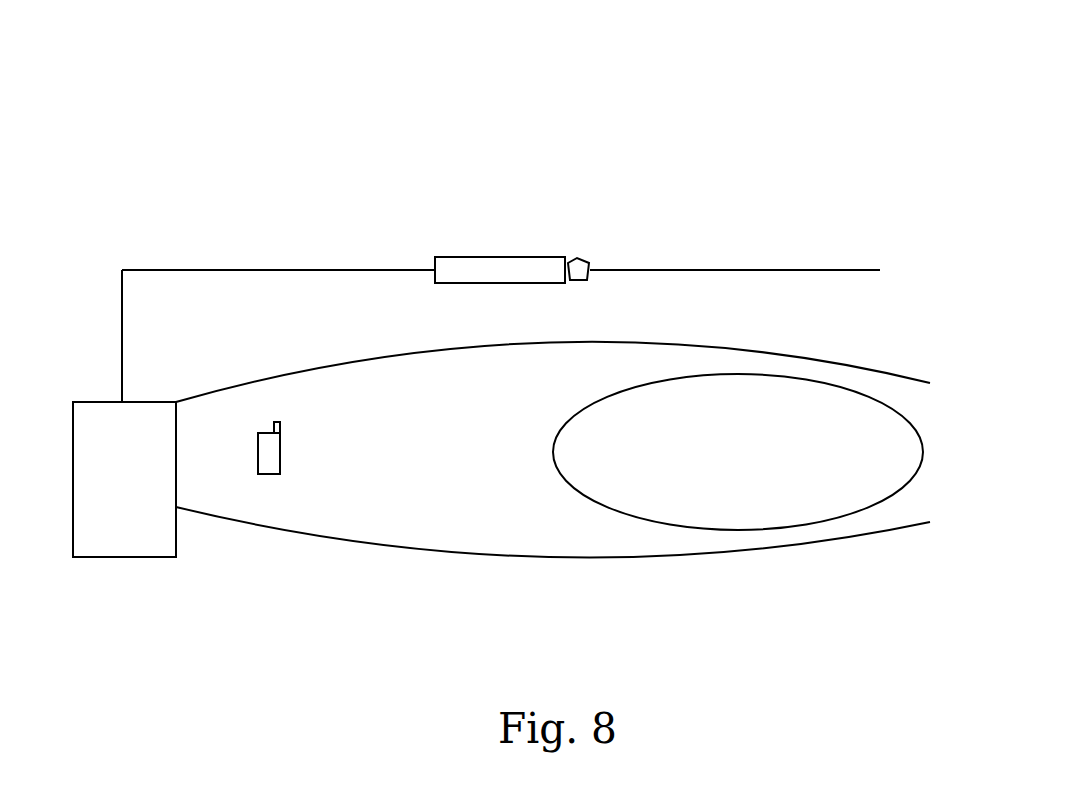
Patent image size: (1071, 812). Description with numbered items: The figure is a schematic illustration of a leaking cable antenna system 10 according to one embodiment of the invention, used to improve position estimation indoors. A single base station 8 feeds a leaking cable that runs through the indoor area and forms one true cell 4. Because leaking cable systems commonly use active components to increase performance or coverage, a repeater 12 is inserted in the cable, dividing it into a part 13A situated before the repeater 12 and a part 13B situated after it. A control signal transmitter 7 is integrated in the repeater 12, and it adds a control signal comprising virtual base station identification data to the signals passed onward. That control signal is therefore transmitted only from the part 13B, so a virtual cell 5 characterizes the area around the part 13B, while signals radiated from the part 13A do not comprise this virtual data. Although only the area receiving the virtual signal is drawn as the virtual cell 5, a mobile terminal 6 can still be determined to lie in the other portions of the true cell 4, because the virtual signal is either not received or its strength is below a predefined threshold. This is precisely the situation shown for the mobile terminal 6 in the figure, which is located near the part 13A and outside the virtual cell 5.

The communication system 10 is at (196, 134).
The part of the leaking cable system 13A is at (176, 270).
The part of the leaking cable system 13B is at (635, 270).
The repeater 12 is at (433, 259).
The control signal transmitter 7 is at (577, 259).
The base station 8 is at (163, 533).
The mobile terminal 6 is at (275, 457).
The cell 4 is at (568, 548).
The virtual cell 5 is at (738, 518).